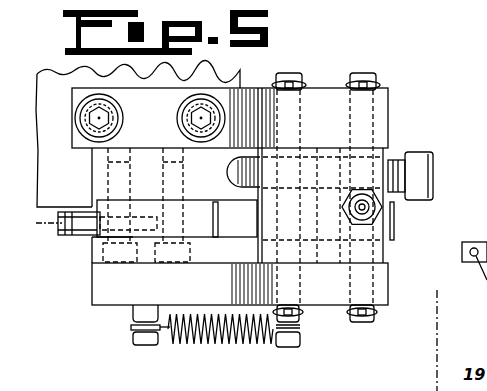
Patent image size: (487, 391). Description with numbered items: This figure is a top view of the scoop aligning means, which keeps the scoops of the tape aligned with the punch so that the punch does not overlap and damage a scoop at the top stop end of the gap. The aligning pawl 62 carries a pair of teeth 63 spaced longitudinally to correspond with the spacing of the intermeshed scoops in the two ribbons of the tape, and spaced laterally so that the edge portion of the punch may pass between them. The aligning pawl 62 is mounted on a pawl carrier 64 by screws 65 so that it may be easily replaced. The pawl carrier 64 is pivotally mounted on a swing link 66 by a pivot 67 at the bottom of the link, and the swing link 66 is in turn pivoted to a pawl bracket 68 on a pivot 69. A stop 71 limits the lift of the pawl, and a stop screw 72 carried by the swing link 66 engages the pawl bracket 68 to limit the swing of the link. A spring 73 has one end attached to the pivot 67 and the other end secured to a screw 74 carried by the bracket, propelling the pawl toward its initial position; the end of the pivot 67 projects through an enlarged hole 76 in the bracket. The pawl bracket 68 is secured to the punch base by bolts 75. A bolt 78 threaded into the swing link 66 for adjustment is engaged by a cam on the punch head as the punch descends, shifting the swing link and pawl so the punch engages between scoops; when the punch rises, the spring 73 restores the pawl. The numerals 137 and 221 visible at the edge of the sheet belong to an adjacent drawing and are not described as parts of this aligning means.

The aligning pawl 62 is at (76, 238).
The teeth 63 is at (56, 224).
The pawl carrier 64 is at (97, 185).
The screws 65 is at (110, 176).
The swing link 66 is at (392, 247).
The pivot 67 is at (299, 341).
The pawl bracket 68 is at (389, 117).
The pivot 69 is at (290, 74).
The stop 71 is at (366, 323).
The stop screw 72 is at (395, 212).
The spring 73 is at (206, 343).
The screw 74 is at (138, 316).
The bolts 75 is at (177, 119).
The enlarged hole 76 is at (245, 296).
The bolt 78 is at (432, 176).
The adjacent figure element 137 is at (336, 0).
The adjacent figure element 221 is at (421, 0).